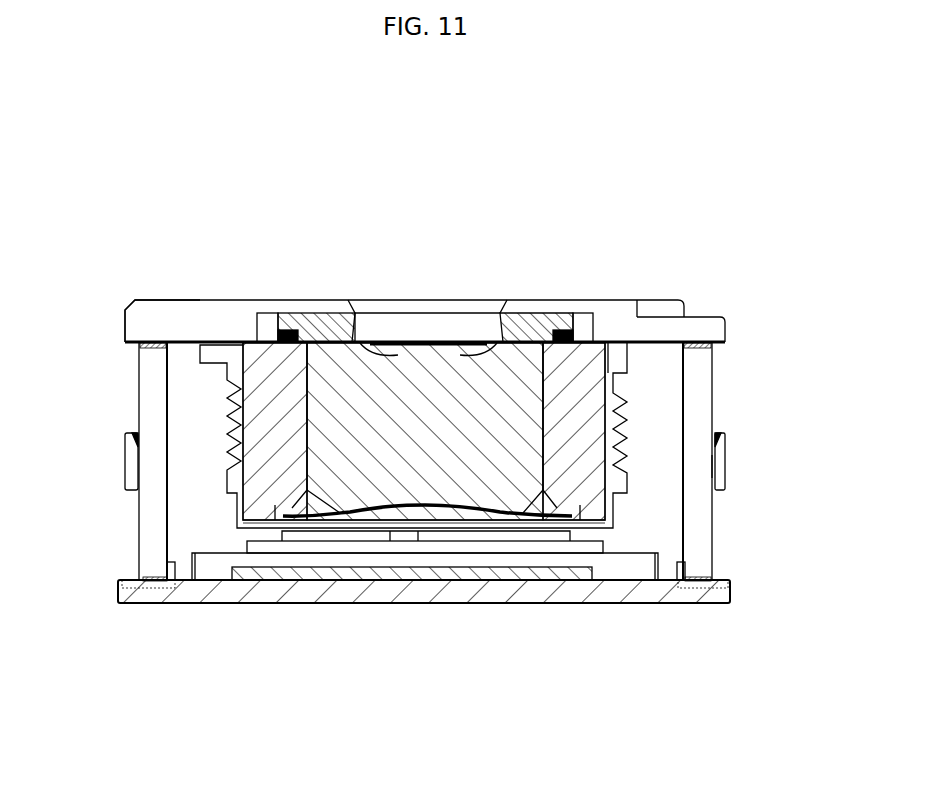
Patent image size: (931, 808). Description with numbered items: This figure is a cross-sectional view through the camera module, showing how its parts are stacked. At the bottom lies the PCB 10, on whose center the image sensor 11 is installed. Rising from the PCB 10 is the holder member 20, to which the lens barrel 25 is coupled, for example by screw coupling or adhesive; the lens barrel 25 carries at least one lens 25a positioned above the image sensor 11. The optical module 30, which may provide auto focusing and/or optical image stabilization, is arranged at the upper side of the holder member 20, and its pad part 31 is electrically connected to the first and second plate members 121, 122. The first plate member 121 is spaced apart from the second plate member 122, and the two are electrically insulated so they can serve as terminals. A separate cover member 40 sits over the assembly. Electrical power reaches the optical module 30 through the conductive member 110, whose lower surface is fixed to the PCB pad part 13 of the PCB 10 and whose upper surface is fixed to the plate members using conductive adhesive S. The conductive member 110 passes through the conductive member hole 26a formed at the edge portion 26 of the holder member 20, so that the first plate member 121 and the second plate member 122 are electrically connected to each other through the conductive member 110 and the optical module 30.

The PCB 10 is at (617, 590).
The image sensor 11 is at (541, 582).
The PCB pad part 13 is at (158, 587).
The holder member 20 is at (667, 515).
The lens barrel 25 is at (598, 382).
The lens 25a is at (430, 370).
The edge portion 26 is at (722, 445).
The conductive member hole 26a is at (727, 470).
The optical module 30 is at (538, 330).
The pad part 31 is at (292, 330).
The cover member 40 is at (618, 315).
The conductive member 110 is at (153, 505).
The first plate member 121 is at (187, 343).
The second plate member 122 is at (655, 340).
The conductive adhesive S is at (128, 344).